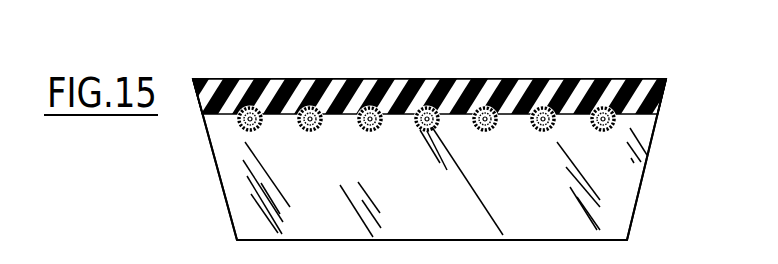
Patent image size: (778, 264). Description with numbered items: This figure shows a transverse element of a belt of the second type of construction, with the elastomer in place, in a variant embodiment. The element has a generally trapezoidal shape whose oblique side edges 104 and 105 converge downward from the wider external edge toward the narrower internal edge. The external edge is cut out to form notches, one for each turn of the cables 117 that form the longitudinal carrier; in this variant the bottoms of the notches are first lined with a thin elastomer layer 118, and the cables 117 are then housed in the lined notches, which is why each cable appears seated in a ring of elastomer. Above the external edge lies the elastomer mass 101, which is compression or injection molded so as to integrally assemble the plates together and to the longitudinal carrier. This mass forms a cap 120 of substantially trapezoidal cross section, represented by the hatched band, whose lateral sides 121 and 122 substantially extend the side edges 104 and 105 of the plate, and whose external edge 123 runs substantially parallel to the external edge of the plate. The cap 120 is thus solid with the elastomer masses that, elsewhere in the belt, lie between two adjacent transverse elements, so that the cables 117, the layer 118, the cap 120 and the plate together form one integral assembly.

The elastomer mass 101 is at (302, 71).
The side edge 104 is at (223, 188).
The side edge 105 is at (639, 190).
The cables 117 is at (481, 96).
The thin elastomer layer 118 is at (313, 131).
The cap 120 is at (535, 78).
The lateral side 121 is at (194, 82).
The lateral side 122 is at (663, 93).
The external edge 123 is at (372, 78).